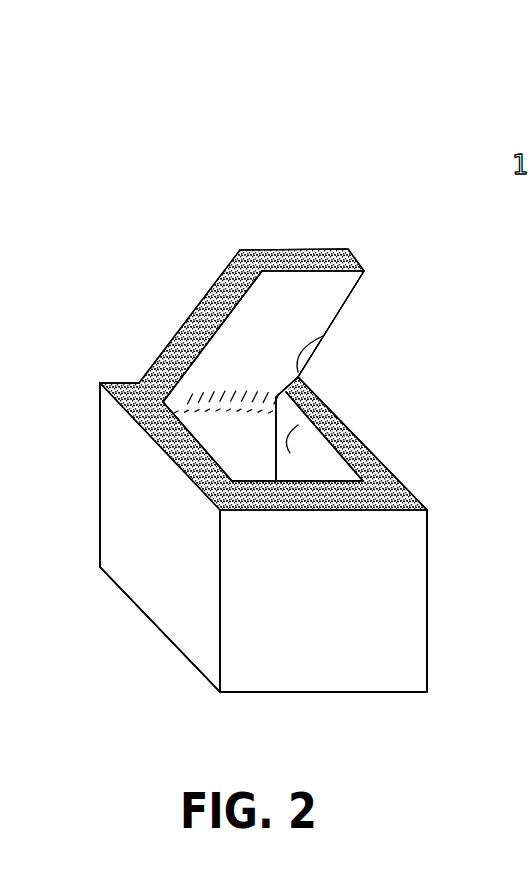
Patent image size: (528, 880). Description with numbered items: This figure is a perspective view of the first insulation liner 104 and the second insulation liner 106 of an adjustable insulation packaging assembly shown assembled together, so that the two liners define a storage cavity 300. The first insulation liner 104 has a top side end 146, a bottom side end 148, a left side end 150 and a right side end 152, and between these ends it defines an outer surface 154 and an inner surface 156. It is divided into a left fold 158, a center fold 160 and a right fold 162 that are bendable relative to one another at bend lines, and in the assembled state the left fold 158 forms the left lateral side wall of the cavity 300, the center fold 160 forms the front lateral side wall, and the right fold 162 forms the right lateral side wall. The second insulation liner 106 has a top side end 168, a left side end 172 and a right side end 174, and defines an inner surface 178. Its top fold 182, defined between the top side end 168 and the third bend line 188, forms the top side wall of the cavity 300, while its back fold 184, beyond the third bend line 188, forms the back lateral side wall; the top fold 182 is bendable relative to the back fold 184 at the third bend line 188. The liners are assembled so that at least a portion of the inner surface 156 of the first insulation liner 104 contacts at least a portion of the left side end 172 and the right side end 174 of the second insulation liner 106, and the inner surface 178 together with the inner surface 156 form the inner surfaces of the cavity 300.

The first insulation liner 104 is at (374, 443).
The second insulation liner 106 is at (302, 250).
The top side end 146 is at (342, 510).
The bottom side end 148 is at (322, 693).
The left side end 150 is at (100, 458).
The right side end 152 is at (323, 338).
The outer surface 154 is at (113, 555).
The inner surface 156 is at (325, 407).
The left fold 158 is at (158, 577).
The center fold 160 is at (278, 662).
The right fold 162 is at (404, 482).
The top side end 168 is at (335, 295).
The left side end 172 is at (204, 303).
The right side end 174 is at (331, 328).
The inner surface 178 is at (364, 273).
The top fold 182 is at (266, 297).
The back fold 184 is at (244, 432).
The third bend line 188 is at (140, 383).
The storage cavity 300 is at (316, 456).